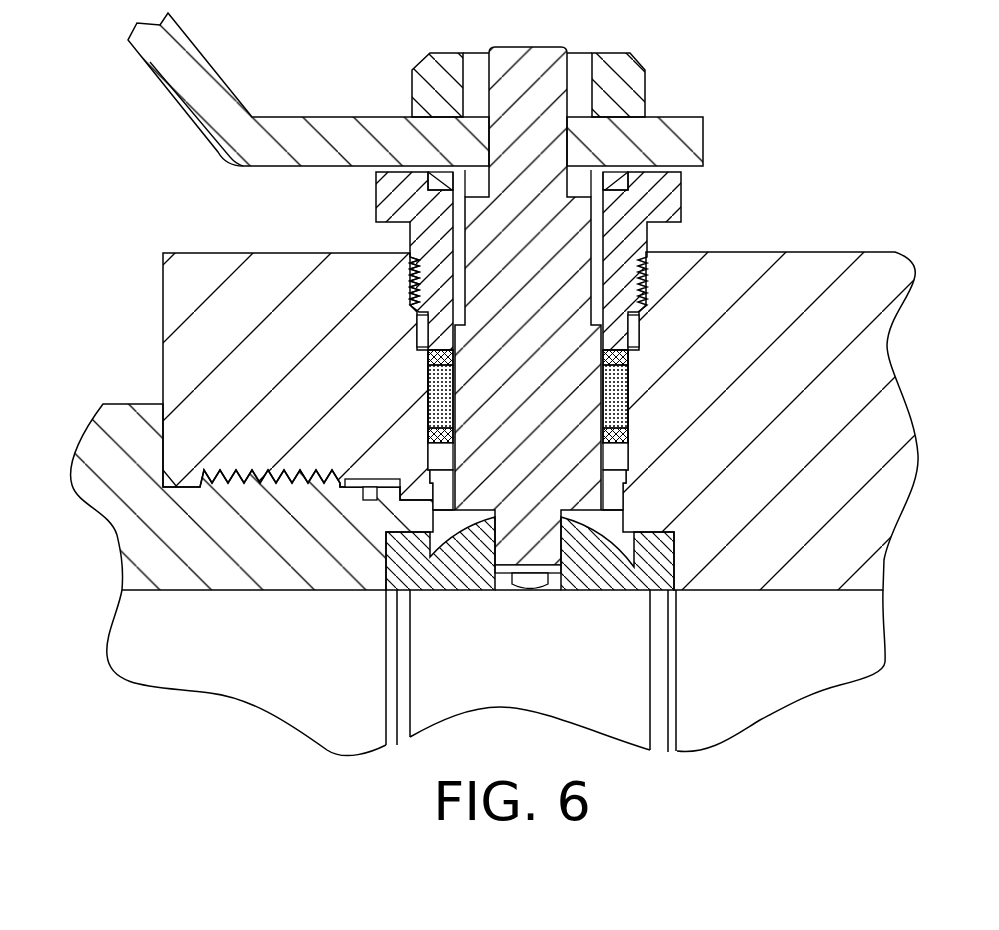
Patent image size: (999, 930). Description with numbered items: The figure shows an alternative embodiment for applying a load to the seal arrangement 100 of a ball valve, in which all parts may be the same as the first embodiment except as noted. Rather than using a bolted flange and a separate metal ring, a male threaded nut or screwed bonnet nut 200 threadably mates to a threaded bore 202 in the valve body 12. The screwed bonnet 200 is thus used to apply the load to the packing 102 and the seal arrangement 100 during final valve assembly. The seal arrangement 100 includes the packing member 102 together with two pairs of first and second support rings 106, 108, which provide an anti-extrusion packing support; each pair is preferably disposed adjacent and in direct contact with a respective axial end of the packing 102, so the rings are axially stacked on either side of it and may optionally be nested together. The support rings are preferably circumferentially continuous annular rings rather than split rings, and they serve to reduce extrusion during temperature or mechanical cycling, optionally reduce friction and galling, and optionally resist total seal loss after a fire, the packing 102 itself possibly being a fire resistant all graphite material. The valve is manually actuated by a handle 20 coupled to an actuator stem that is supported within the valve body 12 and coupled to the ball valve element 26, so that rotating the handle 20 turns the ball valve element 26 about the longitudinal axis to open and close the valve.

The valve body 12 is at (875, 296).
The handle 20 is at (377, 123).
The ball valve element 26 is at (467, 582).
The seal arrangement 100 is at (461, 430).
The packing member 102 is at (632, 378).
The first support ring 106 is at (443, 447).
The second support ring 108 is at (455, 432).
The screwed bonnet nut 200 is at (675, 196).
The threaded bore 202 is at (425, 257).